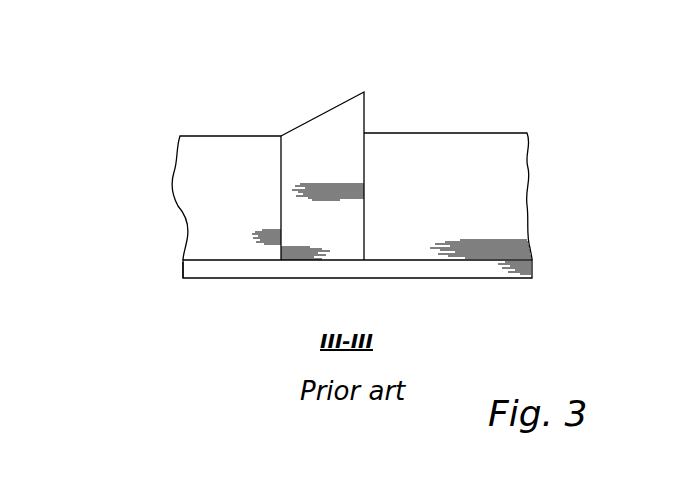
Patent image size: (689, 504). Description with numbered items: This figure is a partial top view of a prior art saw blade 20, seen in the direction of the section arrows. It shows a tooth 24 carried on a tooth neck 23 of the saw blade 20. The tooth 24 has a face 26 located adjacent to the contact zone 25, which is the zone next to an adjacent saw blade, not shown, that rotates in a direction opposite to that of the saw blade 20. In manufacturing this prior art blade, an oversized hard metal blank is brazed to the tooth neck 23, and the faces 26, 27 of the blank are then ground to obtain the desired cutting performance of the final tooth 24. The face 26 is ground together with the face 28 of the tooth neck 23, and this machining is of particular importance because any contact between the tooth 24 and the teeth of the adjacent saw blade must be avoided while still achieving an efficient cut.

The prior art saw blade 20 is at (142, 104).
The tooth neck 23 is at (235, 128).
The tooth 24 is at (304, 113).
The contact zone 25 is at (455, 278).
The face 26 is at (315, 262).
The face 27 is at (340, 103).
The face of the tooth neck 28 is at (228, 262).